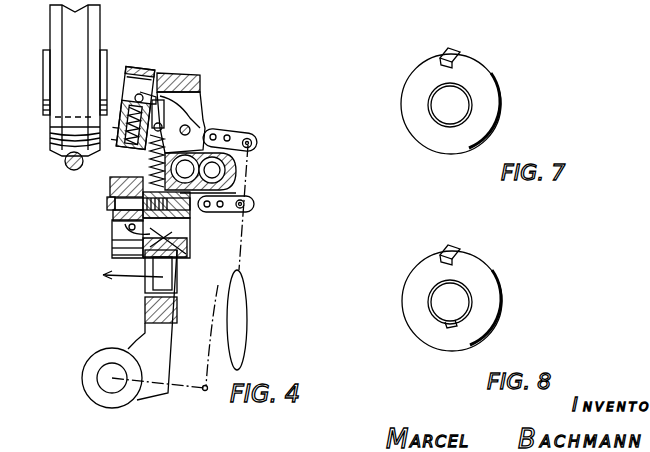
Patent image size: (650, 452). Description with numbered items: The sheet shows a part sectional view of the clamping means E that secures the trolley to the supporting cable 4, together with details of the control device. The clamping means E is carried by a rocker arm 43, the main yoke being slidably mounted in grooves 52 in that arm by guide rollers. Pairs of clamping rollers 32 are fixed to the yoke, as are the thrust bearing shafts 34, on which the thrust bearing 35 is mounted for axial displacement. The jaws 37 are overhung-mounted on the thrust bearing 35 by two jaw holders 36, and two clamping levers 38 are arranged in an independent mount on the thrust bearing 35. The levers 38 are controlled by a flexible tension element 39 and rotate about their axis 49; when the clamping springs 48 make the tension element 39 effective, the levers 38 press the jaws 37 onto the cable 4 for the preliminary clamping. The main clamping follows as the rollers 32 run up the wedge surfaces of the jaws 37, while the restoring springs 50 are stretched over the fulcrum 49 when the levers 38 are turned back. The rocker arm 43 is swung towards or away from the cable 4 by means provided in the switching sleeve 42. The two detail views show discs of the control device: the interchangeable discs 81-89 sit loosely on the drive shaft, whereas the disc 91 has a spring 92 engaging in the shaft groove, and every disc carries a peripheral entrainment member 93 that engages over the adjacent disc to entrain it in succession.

In FIG. 4, the supporting cable 4 is at (71, 165).
In FIG. 4, the clamping rollers 32 is at (142, 58).
In FIG. 4, the thrust bearing shafts 34 is at (185, 169).
In FIG. 4, the thrust bearing 35 is at (206, 171).
In FIG. 4, the jaw holders 36 is at (183, 222).
In FIG. 4, the jaws 37 is at (113, 162).
In FIG. 4, the clamping levers 38 is at (182, 118).
In FIG. 4, the flexible tension element 39 is at (247, 330).
In FIG. 4, the switching sleeve 42 is at (88, 366).
In FIG. 4, the rocker arm 43 is at (148, 330).
In FIG. 4, the clamping springs 48 is at (137, 186).
In FIG. 4, the axis 49 is at (190, 130).
In FIG. 4, the restoring springs 50 is at (141, 98).
In FIG. 4, the grooves 52 is at (168, 280).
In FIG. 7, the circular discs 81-89 is at (490, 126).
In FIG. 8, the disc 91 is at (418, 276).
In FIG. 8, the spring 92 is at (452, 328).
In FIG. 7, the entrainment member 93 is at (458, 52).
In FIG. 8, the entrainment member 93 is at (458, 250).
In FIG. 4, the clamping means E is at (201, 80).